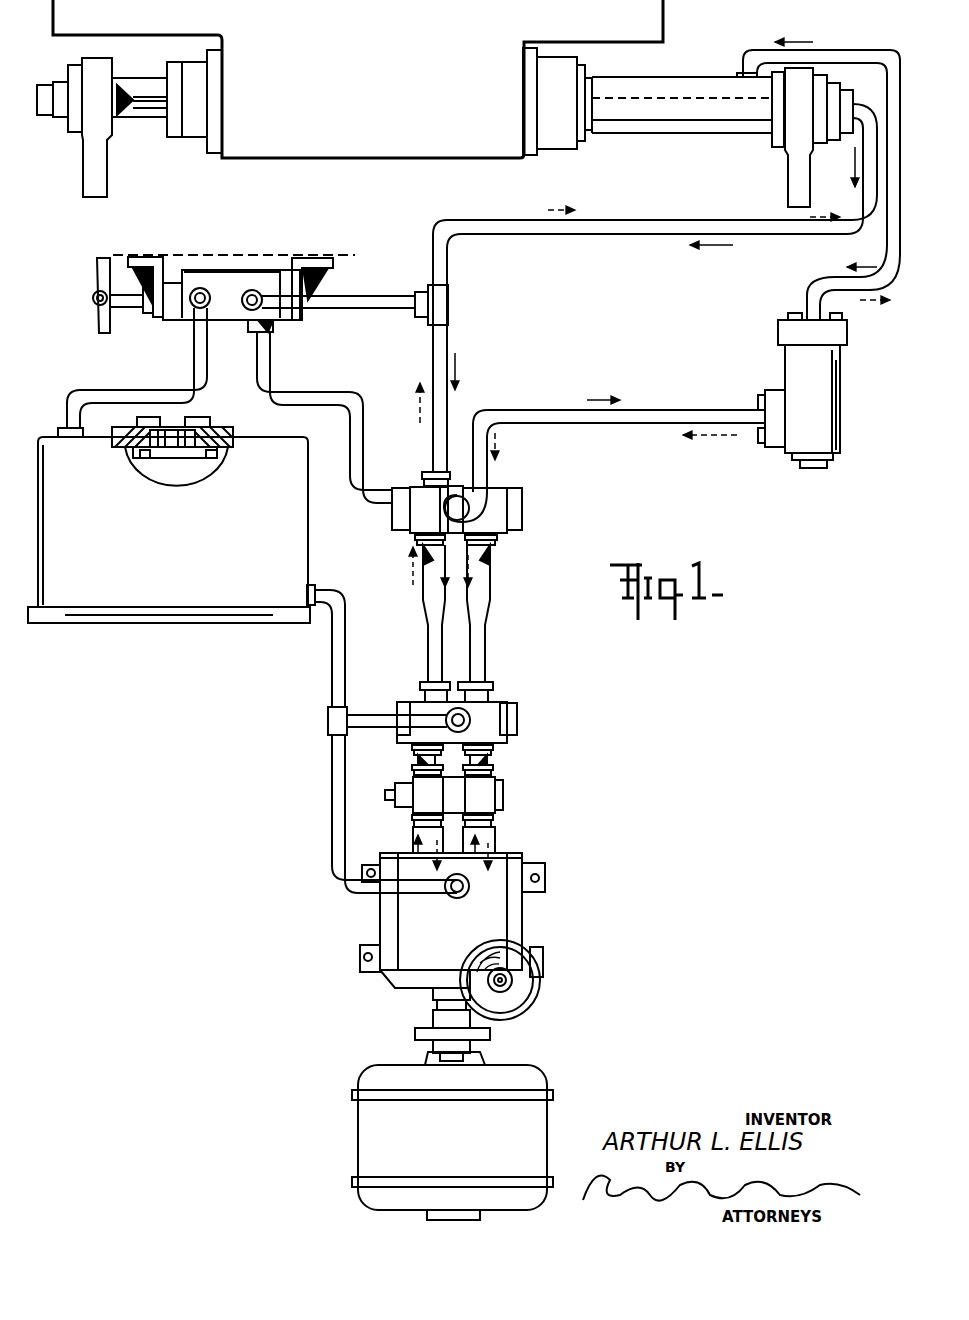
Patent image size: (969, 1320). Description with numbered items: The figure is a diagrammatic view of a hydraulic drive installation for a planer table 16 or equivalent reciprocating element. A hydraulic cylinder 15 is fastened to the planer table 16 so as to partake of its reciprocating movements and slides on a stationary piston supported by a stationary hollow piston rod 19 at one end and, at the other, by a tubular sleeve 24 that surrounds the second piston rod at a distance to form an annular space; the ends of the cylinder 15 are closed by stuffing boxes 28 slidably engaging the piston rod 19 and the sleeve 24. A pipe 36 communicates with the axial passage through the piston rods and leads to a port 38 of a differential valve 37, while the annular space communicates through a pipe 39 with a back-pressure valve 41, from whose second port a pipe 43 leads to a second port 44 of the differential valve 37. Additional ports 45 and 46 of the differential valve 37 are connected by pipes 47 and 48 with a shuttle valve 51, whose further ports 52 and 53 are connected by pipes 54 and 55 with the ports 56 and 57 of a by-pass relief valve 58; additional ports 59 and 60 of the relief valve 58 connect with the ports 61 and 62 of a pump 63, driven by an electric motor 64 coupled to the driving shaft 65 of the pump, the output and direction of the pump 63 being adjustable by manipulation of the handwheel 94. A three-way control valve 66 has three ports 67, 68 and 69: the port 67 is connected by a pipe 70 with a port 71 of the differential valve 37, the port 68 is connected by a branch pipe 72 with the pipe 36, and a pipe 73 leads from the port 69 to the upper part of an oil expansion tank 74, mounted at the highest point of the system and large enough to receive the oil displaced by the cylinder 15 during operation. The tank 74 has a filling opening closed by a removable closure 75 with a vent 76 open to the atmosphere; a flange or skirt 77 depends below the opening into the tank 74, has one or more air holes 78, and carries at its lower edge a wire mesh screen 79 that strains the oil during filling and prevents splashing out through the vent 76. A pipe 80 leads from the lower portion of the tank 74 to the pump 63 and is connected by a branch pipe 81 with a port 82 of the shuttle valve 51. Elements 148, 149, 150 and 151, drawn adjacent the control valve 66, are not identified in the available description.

The hydraulic cylinder 15 is at (455, 158).
The planer table 16 is at (648, 13).
The piston rod 19 is at (133, 130).
The tubular sleeve 24 is at (690, 120).
The stuffing boxes 28 is at (557, 140).
The pipe 36 is at (647, 240).
The differential valve 37 is at (508, 503).
The port 38 is at (420, 476).
The pipe 39 is at (836, 58).
The back-pressure valve 41 is at (822, 382).
The pipe 43 is at (655, 420).
The second port 44 is at (470, 490).
The port 45 is at (425, 520).
The port 46 is at (490, 525).
The pipe 47 is at (425, 595).
The pipe 48 is at (488, 598).
The shuttle valve 51 is at (518, 714).
The port 52 is at (412, 752).
The port 53 is at (493, 753).
The pipe 54 is at (415, 768).
The pipe 55 is at (495, 767).
The port 56 is at (425, 785).
The port 57 is at (495, 780).
The by-pass relief valve 58 is at (490, 798).
The port 59 is at (415, 827).
The port 60 is at (495, 833).
The port 61 is at (432, 865).
The port 62 is at (486, 870).
The pump 63 is at (452, 920).
The electric motor 64 is at (452, 1136).
The driving shaft 65 is at (435, 1015).
The three-way control valve 66 is at (235, 268).
The port 67 is at (252, 330).
The port 68 is at (260, 290).
The port 69 is at (192, 312).
The pipe 70 is at (334, 398).
The port 71 is at (392, 503).
The branch pipe 72 is at (368, 308).
The pipe 73 is at (130, 392).
The oil expansion tank 74 is at (169, 530).
The removable closure 75 is at (240, 424).
The vent 76 is at (170, 425).
The flange or skirt 77 is at (228, 465).
The air holes 78 is at (138, 452).
The wire mesh screen 79 is at (172, 478).
The pipe 80 is at (332, 668).
The branch pipe 81 is at (370, 718).
The port 82 is at (470, 712).
The handwheel 94 is at (538, 1002).
The valve stem 148 is at (137, 308).
The hand lever 149 is at (96, 275).
The pivot pin 150 is at (92, 302).
The bracket 151 is at (323, 263).